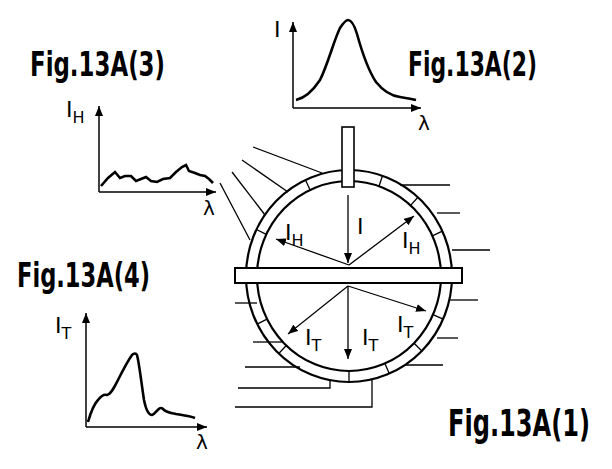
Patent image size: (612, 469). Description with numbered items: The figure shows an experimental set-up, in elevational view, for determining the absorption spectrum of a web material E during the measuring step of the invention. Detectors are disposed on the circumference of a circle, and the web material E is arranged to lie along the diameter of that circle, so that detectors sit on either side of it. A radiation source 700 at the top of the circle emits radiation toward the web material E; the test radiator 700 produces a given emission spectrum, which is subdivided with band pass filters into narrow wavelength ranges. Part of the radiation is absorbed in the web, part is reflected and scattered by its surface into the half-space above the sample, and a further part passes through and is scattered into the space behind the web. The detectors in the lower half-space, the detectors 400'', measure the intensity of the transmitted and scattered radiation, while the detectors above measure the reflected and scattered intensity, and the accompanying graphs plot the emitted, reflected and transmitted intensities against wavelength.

The radiation source 700 is at (356, 150).
The detectors 400'' is at (382, 341).
The web material E is at (464, 277).